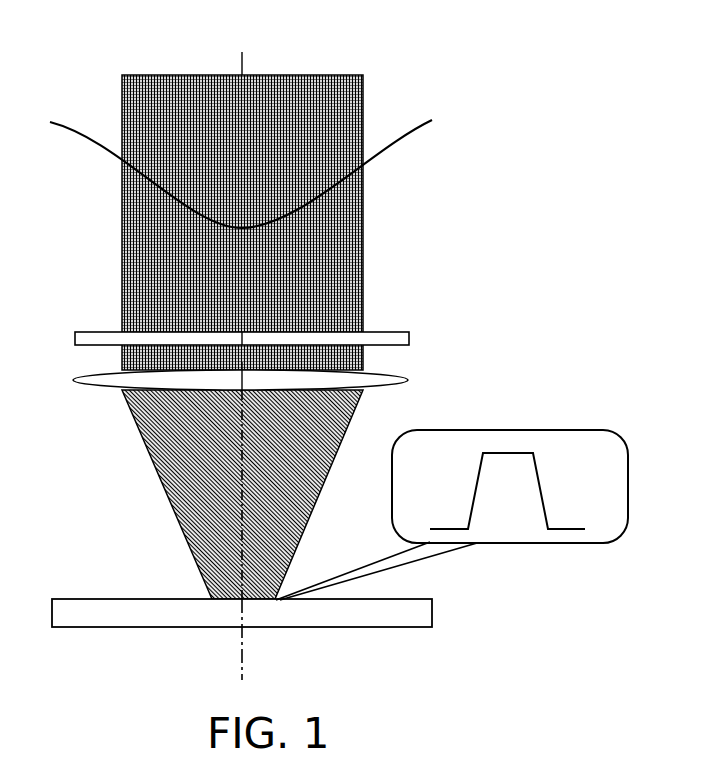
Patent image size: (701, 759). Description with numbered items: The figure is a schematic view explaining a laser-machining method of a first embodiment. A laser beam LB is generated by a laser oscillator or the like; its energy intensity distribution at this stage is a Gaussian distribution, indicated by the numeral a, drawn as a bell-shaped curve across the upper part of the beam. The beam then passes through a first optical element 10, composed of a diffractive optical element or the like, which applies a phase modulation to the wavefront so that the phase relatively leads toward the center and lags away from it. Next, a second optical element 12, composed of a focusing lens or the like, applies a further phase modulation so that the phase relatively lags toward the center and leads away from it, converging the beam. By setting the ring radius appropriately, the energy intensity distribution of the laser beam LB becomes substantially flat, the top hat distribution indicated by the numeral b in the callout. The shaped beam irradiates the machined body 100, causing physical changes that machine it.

The laser beam LB is at (345, 75).
The Gaussian distribution a is at (70, 125).
The first optical element 10 is at (409, 334).
The second optical element 12 is at (408, 380).
The machined body 100 is at (432, 612).
The top hat distribution b is at (573, 528).